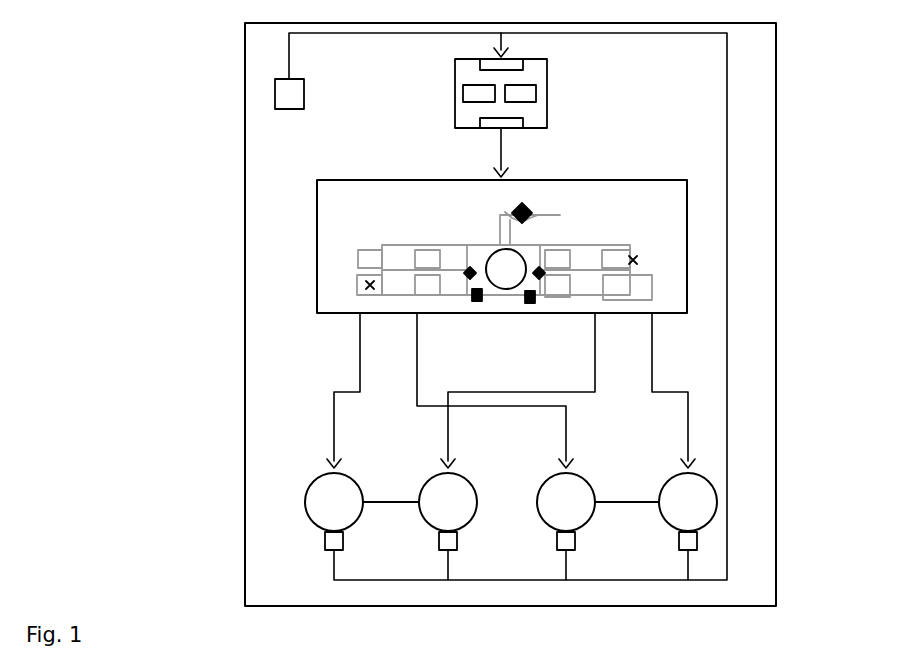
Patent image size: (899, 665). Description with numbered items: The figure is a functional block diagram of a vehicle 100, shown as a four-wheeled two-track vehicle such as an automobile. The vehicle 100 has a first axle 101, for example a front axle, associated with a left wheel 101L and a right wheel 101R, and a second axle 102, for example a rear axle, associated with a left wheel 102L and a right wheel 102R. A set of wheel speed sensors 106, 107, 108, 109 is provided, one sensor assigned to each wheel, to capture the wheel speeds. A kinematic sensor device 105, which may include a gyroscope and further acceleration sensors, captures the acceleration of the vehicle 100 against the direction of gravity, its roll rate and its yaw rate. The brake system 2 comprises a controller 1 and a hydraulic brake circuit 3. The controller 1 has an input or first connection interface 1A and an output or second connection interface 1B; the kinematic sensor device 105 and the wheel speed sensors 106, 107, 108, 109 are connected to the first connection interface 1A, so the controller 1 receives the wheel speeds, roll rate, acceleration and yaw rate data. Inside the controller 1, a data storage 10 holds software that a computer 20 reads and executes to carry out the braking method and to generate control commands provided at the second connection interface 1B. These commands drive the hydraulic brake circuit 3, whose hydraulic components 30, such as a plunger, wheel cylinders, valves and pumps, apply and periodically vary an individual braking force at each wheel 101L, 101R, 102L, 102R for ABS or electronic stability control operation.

The vehicle 100 is at (776, 233).
The controller 1 is at (547, 70).
The first connection interface 1A is at (480, 62).
The second connection interface 1B is at (512, 130).
The data storage 10 is at (463, 93).
The computer 20 is at (536, 95).
The brake system 2 is at (318, 160).
The hydraulic brake circuit 3 is at (317, 230).
The hydraulic components 30 is at (395, 260).
The kinematic sensor device 105 is at (304, 100).
The first axle 101 is at (393, 500).
The left wheel 101L is at (305, 492).
The right wheel 101R is at (462, 480).
The second axle 102 is at (635, 500).
The left wheel 102L is at (537, 512).
The right wheel 102R is at (717, 492).
The wheel speed sensor 106 is at (325, 538).
The wheel speed sensor 107 is at (439, 538).
The wheel speed sensor 108 is at (557, 538).
The wheel speed sensor 109 is at (679, 538).